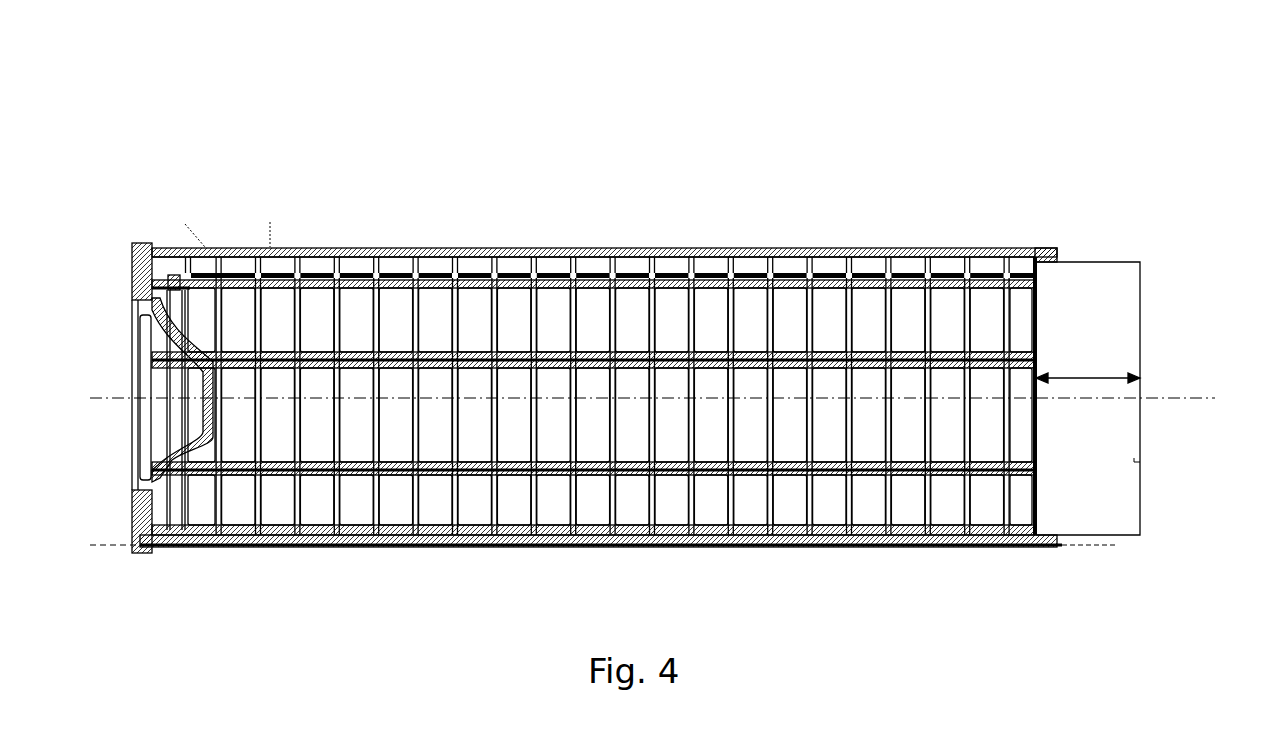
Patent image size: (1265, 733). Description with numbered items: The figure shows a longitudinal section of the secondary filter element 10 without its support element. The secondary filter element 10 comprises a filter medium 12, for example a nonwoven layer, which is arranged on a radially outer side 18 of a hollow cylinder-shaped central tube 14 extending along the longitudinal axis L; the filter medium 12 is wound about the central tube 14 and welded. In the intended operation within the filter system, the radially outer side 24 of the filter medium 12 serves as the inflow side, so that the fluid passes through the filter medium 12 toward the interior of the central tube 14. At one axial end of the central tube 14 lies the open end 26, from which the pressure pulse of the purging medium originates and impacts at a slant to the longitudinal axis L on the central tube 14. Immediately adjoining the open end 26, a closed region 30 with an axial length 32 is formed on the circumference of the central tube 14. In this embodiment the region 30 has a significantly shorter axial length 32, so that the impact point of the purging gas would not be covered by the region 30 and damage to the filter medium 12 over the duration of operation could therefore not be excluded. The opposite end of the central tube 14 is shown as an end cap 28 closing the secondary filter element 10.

The secondary filter element 10 is at (455, 99).
The filter medium 12 is at (890, 249).
The central tube 14 is at (708, 283).
The radially outer side 18 is at (770, 256).
The radially outer side 24 is at (573, 251).
The open end 26 is at (1143, 306).
The end cap 28 is at (140, 295).
The closed region 30 is at (1082, 263).
The axial length 32 is at (1085, 378).